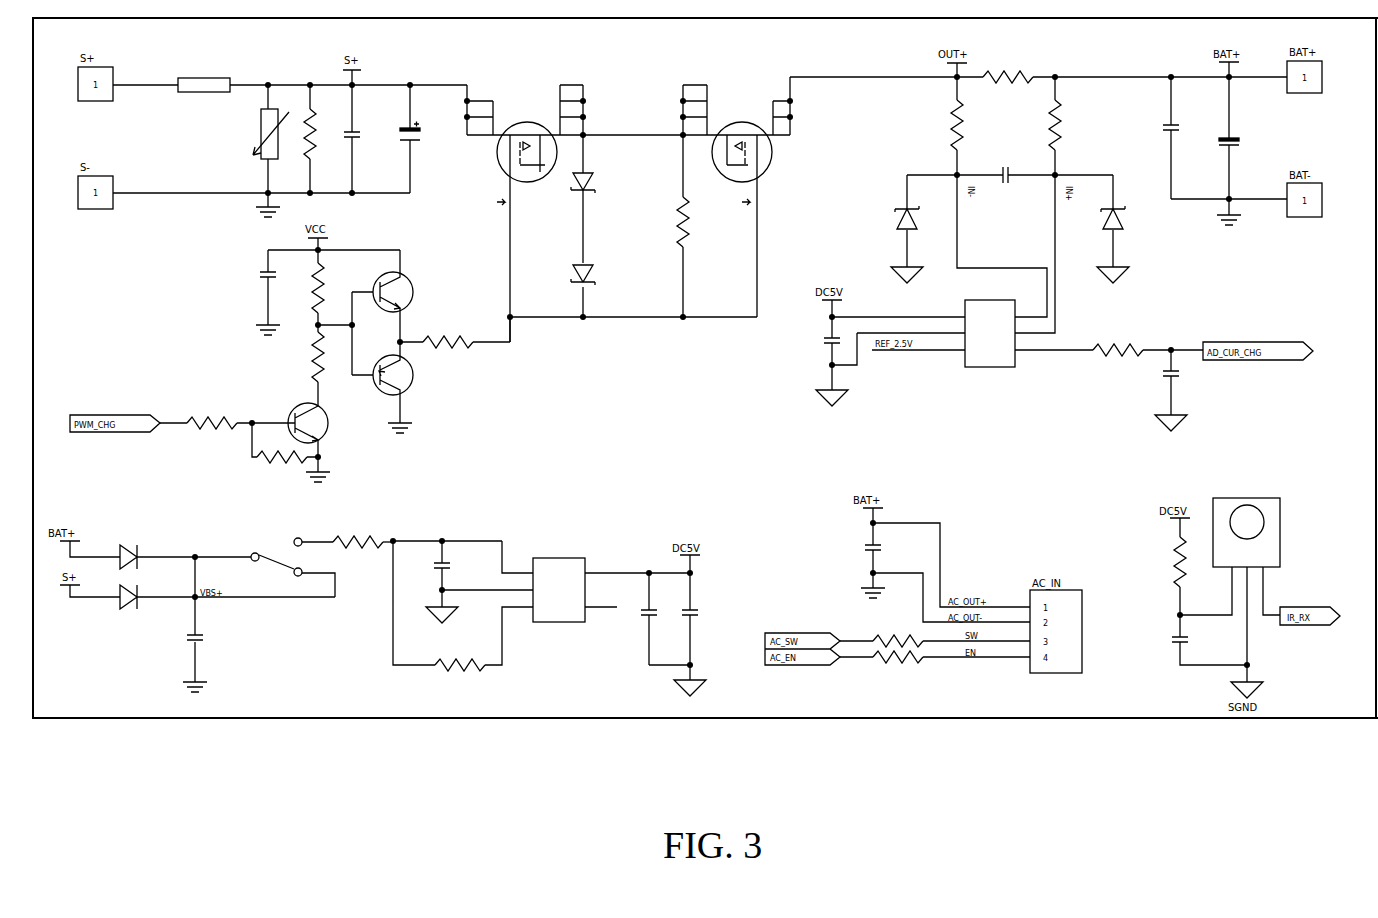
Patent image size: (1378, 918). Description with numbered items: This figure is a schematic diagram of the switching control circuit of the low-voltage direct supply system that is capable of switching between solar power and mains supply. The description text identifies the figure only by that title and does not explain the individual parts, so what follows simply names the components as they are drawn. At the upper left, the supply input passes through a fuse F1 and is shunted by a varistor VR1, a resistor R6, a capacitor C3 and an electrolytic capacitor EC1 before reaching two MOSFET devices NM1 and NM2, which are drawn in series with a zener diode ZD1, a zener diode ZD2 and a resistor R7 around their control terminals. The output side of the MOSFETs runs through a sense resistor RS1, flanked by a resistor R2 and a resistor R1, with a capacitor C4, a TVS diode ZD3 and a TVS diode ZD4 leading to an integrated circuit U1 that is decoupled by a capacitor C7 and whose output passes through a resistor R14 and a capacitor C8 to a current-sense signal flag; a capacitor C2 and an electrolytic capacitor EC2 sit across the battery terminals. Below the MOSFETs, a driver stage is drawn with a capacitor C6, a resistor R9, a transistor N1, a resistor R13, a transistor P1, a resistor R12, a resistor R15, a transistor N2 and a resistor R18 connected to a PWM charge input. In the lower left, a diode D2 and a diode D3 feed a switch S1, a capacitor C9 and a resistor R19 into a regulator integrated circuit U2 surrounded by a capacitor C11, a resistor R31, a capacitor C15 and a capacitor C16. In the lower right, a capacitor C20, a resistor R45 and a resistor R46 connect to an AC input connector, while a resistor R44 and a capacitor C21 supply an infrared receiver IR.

The fuse 25A F1 is at (201, 91).
The varistor 10D180K VR1 is at (243, 139).
The resistor 10K R6 is at (322, 139).
The capacitor 104 C3 is at (360, 139).
The electrolytic capacitor 220uF EC1 is at (425, 139).
The MOSFET RU30100M NM1 is at (525, 195).
The MOSFET RU30100M NM2 is at (739, 126).
The zener diode 12V ZD1 is at (596, 177).
The zener diode 12V ZD2 is at (596, 273).
The resistor 100K R7 is at (697, 226).
The sense resistor 0.002R/2W RS1 is at (1004, 92).
The resistor 0R R2 is at (947, 126).
The resistor 0R R1 is at (1063, 126).
The capacitor NC C4 is at (1004, 174).
The TVS diode 12V ZD3 is at (887, 238).
The TVS diode 12V ZD4 is at (1129, 238).
The current sense amplifier INA199/SGM8199A1 U1 is at (976, 348).
The capacitor 104 C7 is at (825, 370).
The resistor 1K R14 is at (1118, 352).
The capacitor 104 C8 is at (1174, 398).
The capacitor 104 C2 is at (1180, 138).
The electrolytic capacitor 220uF EC2 is at (1243, 138).
The capacitor 10u/50V C6 is at (245, 292).
The resistor 10K R9 is at (332, 287).
The NPN transistor 2N3904 N1 is at (408, 296).
The resistor 100K R13 is at (335, 365).
The PNP transistor 2N3906 P1 is at (408, 387).
The resistor 100R R12 is at (448, 343).
The resistor 4K7 R15 is at (212, 422).
The NPN transistor 2N3904 N2 is at (324, 430).
The resistor 47K R18 is at (285, 452).
The diode SS34 D2 is at (149, 546).
The diode SS34 D3 is at (211, 607).
The switch K12*12*HB S1 is at (286, 562).
The capacitor 104 C9 is at (203, 660).
The resistor 10K R19 is at (363, 539).
The capacitor 106/25V C11 is at (478, 590).
The voltage regulator XC6204B502MR U2 is at (557, 575).
The resistor 10K R31 is at (460, 680).
The capacitor 106/25V C15 is at (624, 619).
The capacitor 104 C16 is at (694, 643).
The capacitor 104 C20 is at (858, 560).
The resistor 100R R45 is at (889, 636).
The resistor 100R R46 is at (889, 667).
The resistor 100R R44 is at (1161, 576).
The capacitor 106/25V C21 is at (1184, 640).
The IR receiver LFN1738AEL IR is at (1243, 525).